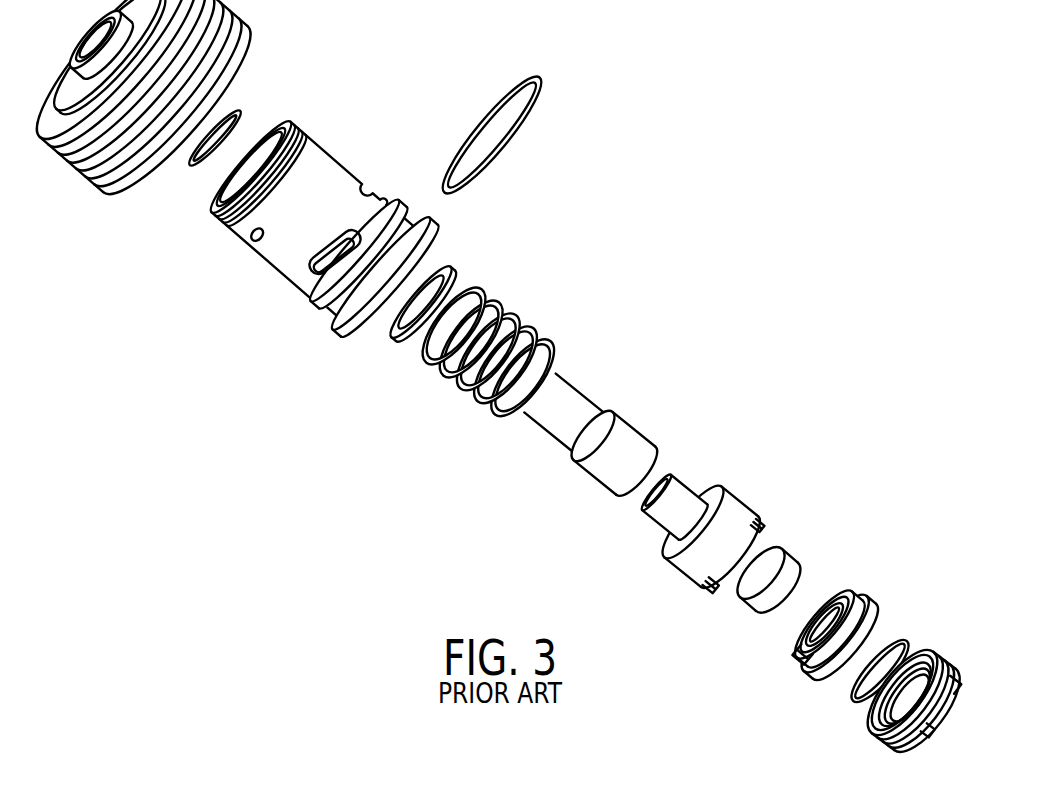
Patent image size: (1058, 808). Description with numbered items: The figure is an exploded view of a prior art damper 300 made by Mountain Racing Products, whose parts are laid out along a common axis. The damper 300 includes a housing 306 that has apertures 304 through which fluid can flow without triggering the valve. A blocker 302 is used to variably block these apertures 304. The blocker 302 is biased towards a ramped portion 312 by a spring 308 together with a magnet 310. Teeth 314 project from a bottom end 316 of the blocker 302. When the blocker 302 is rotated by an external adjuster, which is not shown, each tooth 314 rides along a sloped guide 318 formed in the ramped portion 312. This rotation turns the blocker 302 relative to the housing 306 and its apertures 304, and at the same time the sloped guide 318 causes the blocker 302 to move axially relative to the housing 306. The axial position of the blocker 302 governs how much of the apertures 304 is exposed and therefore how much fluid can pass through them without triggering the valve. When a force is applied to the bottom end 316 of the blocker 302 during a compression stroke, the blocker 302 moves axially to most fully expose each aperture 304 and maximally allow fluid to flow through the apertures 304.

The damper 300 is at (493, 381).
The blocker 302 is at (737, 507).
The apertures 304 is at (316, 272).
The housing 306 is at (332, 172).
The spring 308 is at (525, 330).
The magnet 310 is at (795, 557).
The ramped portion 312 is at (863, 603).
The teeth 314 is at (717, 590).
The bottom end 316 is at (750, 538).
The sloped guide 318 is at (822, 651).